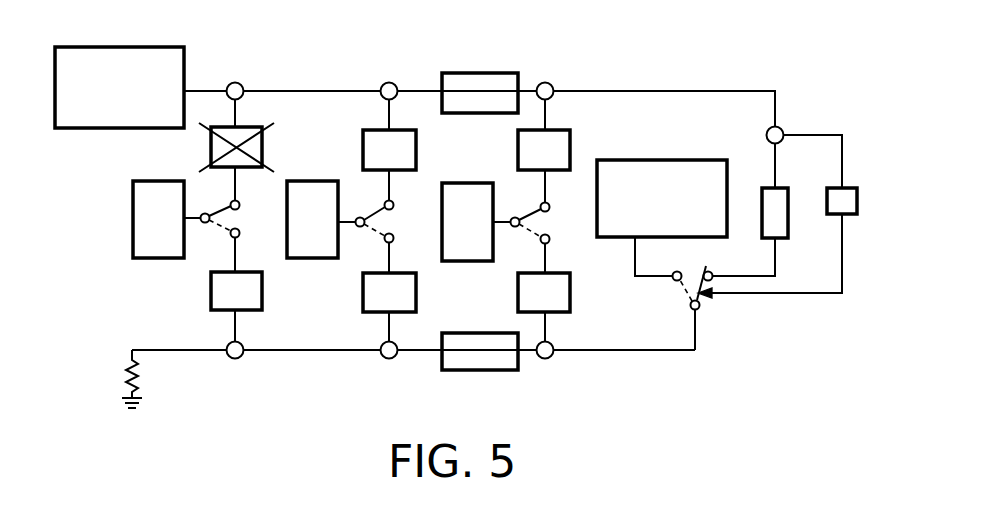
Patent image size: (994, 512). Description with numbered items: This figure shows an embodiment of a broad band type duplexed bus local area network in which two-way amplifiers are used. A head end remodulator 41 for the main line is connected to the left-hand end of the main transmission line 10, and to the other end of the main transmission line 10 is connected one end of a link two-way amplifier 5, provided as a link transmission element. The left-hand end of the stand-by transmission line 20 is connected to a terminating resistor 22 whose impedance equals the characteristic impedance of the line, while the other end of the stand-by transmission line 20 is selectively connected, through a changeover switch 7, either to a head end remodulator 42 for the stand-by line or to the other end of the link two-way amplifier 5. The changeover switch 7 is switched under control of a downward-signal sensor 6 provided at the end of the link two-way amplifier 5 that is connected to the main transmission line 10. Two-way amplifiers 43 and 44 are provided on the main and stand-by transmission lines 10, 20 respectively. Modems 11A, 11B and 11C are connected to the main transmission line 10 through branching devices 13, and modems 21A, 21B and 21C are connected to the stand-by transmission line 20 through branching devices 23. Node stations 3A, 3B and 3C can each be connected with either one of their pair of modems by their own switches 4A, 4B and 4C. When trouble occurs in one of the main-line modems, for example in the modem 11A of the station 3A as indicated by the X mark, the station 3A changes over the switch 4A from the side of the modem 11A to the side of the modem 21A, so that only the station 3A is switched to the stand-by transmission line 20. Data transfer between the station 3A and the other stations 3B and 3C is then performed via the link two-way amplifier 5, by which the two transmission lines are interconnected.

The head end remodulator 41 is at (185, 69).
The head end remodulator 42 is at (693, 159).
The two-way amplifier 43 is at (467, 73).
The two-way amplifier 44 is at (455, 371).
The main transmission line 10 is at (335, 90).
The stand-by transmission line 20 is at (287, 352).
The branching device 13 is at (551, 85).
The branching device 23 is at (551, 359).
The modem 11A is at (262, 149).
The modem 11B is at (416, 158).
The modem 11C is at (570, 154).
The node station 3A is at (175, 178).
The node station 3B is at (334, 179).
The node station 3C is at (501, 181).
The switch 4A is at (207, 213).
The switch 4B is at (373, 192).
The switch 4C is at (527, 192).
The modem 21A is at (259, 311).
The modem 21B is at (415, 313).
The modem 21C is at (570, 300).
The link two-way amplifier 5 is at (762, 200).
The downward-signal sensor 6 is at (827, 200).
The changeover switch 7 is at (700, 307).
The terminating resistor 22 is at (138, 378).